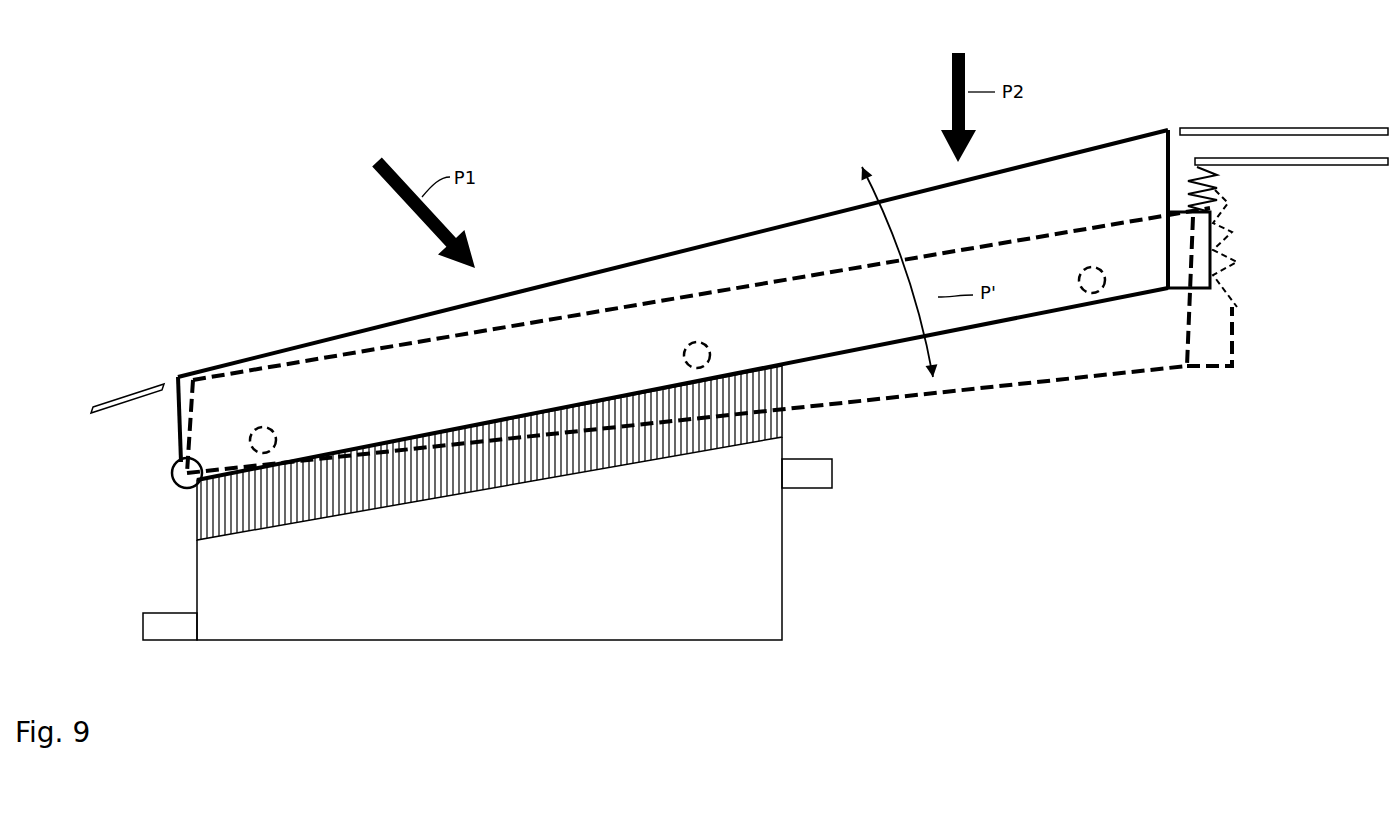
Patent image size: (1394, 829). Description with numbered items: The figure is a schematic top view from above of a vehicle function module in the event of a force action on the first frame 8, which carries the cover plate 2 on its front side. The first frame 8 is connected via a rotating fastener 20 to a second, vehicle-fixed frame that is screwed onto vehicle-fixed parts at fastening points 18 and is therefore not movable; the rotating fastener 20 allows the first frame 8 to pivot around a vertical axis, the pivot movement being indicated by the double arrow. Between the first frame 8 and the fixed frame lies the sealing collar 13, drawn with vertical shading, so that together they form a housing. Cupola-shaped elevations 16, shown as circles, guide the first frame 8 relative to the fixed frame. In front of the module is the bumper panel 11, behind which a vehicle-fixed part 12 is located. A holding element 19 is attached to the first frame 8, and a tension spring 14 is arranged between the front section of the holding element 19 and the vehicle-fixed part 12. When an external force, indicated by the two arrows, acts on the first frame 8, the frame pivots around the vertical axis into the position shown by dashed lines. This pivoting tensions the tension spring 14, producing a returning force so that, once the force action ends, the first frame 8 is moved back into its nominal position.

The cover plate 2 is at (648, 257).
The first frame 8 is at (1080, 180).
The bumper panel 11 is at (132, 395).
The vehicle-fixed part 12 is at (1325, 170).
The sealing collar 13 is at (520, 415).
The tension spring 14 is at (1220, 188).
The cupola-shaped elevations 16 is at (280, 440).
The fastening points 18 is at (178, 630).
The holding element 19 is at (1215, 273).
The rotating fastener 20 is at (182, 490).